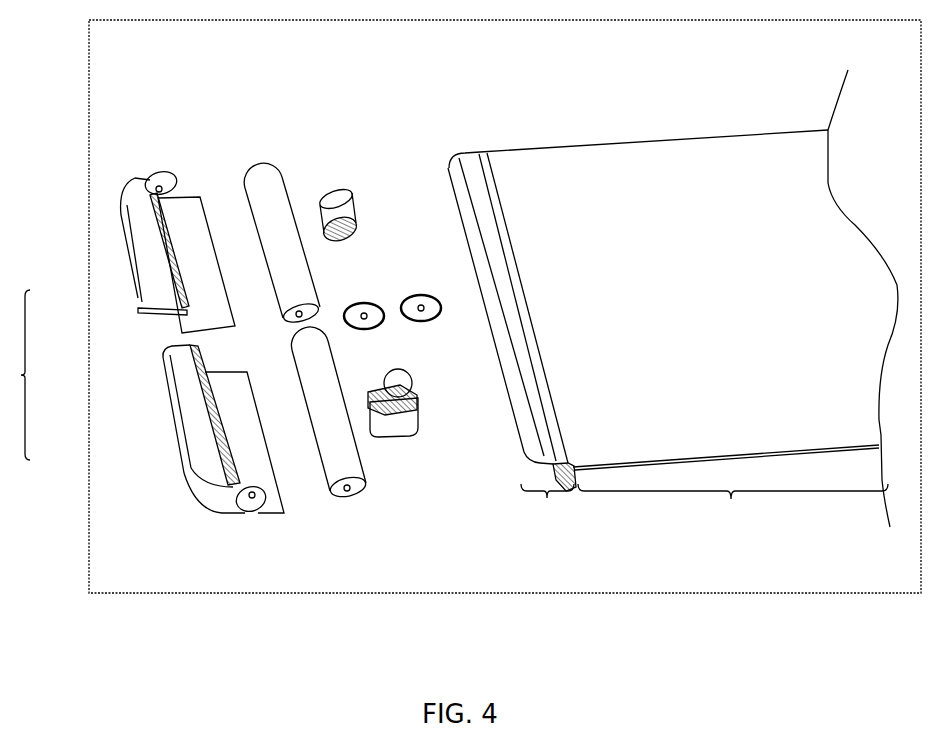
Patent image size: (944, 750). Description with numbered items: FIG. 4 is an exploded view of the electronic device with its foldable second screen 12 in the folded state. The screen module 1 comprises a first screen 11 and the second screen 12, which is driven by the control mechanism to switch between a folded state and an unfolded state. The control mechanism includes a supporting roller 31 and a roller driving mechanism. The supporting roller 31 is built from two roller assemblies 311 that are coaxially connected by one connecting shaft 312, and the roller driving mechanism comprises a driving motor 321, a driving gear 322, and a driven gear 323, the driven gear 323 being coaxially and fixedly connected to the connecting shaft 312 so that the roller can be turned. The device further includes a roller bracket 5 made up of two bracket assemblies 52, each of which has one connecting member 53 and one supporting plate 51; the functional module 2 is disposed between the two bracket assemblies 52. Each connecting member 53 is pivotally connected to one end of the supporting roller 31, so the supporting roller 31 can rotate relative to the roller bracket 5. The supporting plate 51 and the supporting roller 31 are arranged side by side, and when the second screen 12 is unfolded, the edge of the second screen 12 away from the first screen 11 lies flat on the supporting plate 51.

The screen module 1 is at (673, 301).
The first screen 11 is at (680, 107).
The second screen 12 is at (512, 342).
The functional module 2 is at (393, 410).
The supporting roller 31 is at (231, 222).
The roller assembly 311 is at (332, 462).
The connecting shaft 312 is at (303, 318).
The driving motor 321 is at (338, 198).
The driving gear 322 is at (362, 302).
The driven gear 323 is at (408, 297).
The roller bracket 5 is at (143, 333).
The supporting plate 51 is at (152, 273).
The bracket assembly 52 is at (134, 231).
The connecting member 53 is at (157, 187).